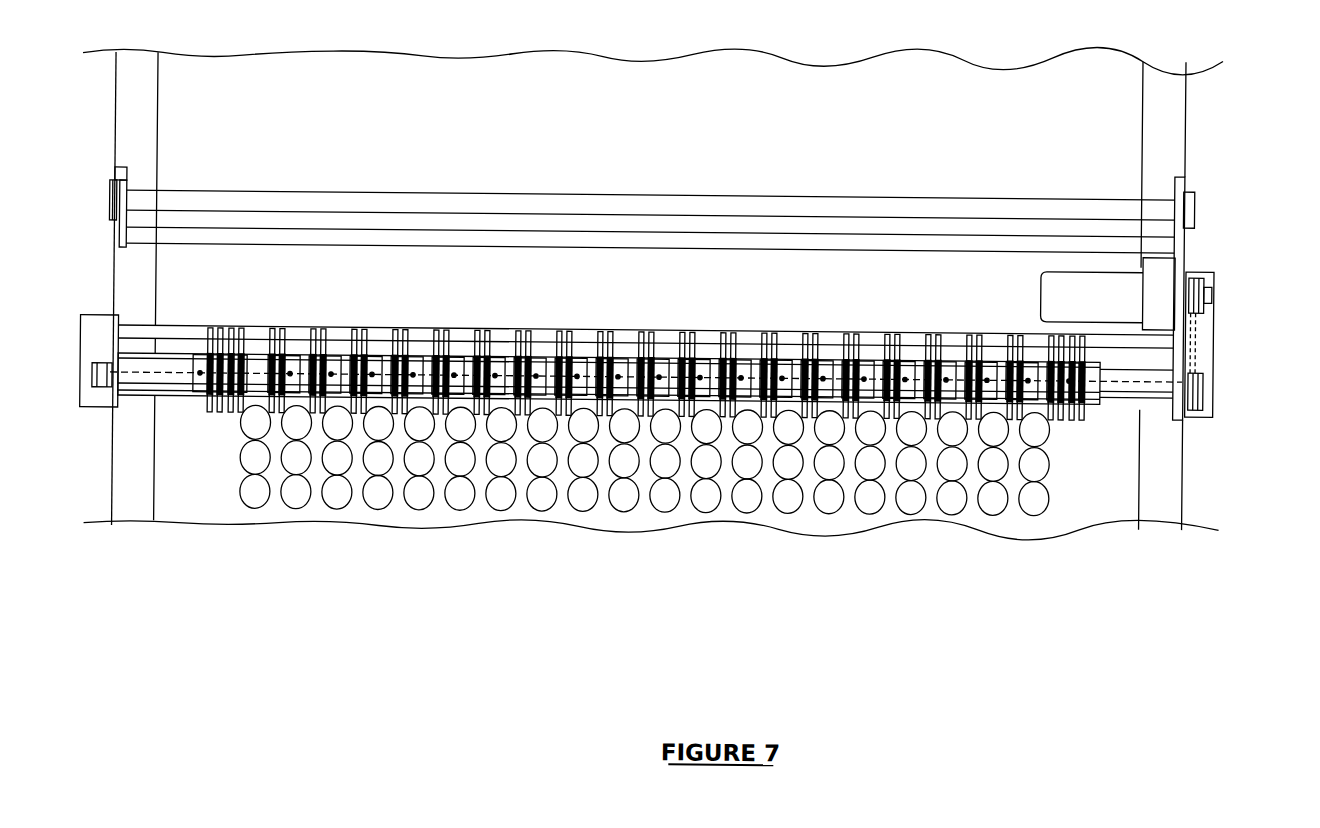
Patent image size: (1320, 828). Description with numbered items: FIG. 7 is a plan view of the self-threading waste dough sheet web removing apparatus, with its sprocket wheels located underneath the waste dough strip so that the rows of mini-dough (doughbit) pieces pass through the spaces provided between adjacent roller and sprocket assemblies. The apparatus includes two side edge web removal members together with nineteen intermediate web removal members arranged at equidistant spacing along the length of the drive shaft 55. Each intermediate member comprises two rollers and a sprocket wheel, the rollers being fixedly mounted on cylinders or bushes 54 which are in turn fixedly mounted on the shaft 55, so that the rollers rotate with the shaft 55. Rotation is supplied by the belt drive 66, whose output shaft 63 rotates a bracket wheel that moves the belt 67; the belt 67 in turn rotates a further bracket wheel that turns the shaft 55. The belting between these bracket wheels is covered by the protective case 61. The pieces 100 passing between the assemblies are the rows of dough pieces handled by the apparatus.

The cylinders or bushes 54 is at (1100, 389).
The drive shaft 55 is at (1140, 367).
The protective case 61 is at (1190, 408).
The output shaft 63 is at (1212, 285).
The belt drive 66 is at (1099, 284).
The belt 67 is at (1197, 340).
The containers 100 is at (1031, 489).